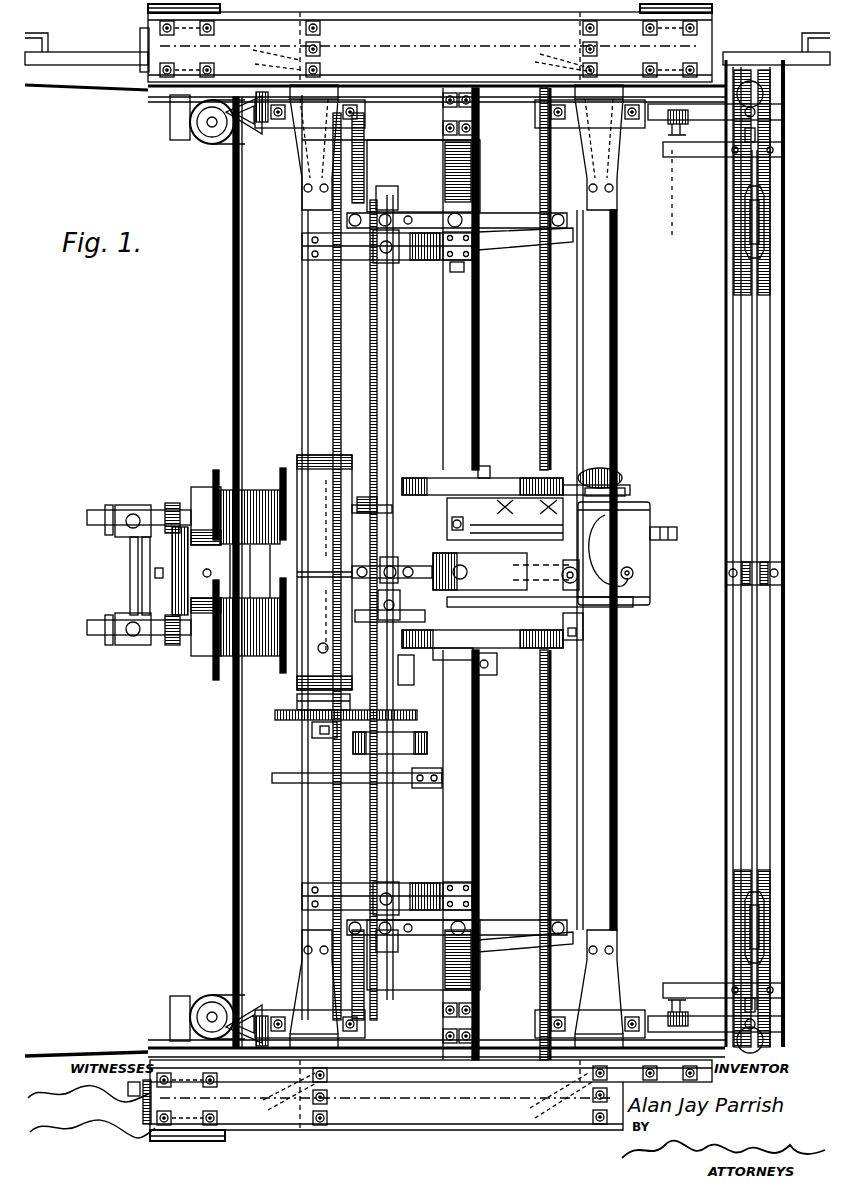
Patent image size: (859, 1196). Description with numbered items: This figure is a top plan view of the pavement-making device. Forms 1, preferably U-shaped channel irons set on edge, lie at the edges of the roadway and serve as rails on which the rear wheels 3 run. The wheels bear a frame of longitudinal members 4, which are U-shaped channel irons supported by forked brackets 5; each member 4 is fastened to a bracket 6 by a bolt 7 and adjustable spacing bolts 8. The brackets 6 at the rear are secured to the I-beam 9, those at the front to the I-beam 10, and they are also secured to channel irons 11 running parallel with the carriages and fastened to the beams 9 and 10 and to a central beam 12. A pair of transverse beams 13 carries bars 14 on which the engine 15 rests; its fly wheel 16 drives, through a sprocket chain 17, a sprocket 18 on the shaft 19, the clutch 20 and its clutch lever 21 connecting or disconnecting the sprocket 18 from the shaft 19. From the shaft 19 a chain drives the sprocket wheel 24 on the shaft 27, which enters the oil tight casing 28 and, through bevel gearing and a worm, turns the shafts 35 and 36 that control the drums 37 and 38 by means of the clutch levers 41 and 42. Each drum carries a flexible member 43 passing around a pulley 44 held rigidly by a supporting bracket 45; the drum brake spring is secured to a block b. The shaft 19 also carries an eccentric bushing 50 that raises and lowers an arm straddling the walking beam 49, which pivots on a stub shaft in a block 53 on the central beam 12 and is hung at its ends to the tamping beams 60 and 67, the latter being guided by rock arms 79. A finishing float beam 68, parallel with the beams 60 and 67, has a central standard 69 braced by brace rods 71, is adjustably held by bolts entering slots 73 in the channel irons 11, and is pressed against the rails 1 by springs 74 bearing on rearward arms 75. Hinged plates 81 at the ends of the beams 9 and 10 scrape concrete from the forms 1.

The forms 1 is at (88, 42).
The rear wheels 3 is at (197, 745).
The longitudinal members 4 is at (360, 50).
The forked brackets 5 is at (148, 10).
The bracket 6 is at (456, 566).
The bolt 7 is at (300, 56).
The adjustable spacing bolts 8 is at (322, 22).
The beam 9 is at (578, 370).
The I-beam 10 is at (306, 376).
The channel irons 11 is at (428, 138).
The central beam 12 is at (332, 24).
The transverse beams 13 is at (423, 477).
The bars 14 is at (583, 625).
The engine 15 is at (628, 518).
The fly wheel 16 is at (512, 478).
The sprocket chain 17 is at (468, 696).
The sprocket 18 is at (722, 547).
The shaft 19 is at (395, 388).
The clutch 20 is at (390, 743).
The clutch lever 21 is at (290, 780).
The sprocket wheel 24 is at (292, 722).
The shaft 27 is at (318, 742).
The oil tight casing 28 is at (324, 572).
The shaft 35 is at (90, 636).
The shaft 36 is at (90, 526).
The drum 37 is at (262, 660).
The drum 38 is at (252, 488).
The clutch lever 41 is at (170, 645).
The clutch lever 42 is at (170, 502).
The flexible member 43 is at (106, 96).
The pulley 44 is at (213, 148).
The supporting bracket 45 is at (245, 135).
The walking beam 49 is at (490, 212).
The eccentric bushing 50 is at (396, 206).
The block 53 is at (475, 262).
The channel iron beam 60 is at (375, 342).
The channel beam 67 is at (565, 420).
The float beam 68 is at (778, 456).
The central standard 69 is at (783, 562).
The brace rods 71 is at (758, 416).
The slots 73 is at (668, 136).
The springs 74 is at (783, 84).
The arms 75 is at (783, 114).
The rock arms 79 is at (530, 238).
The hinged plate 81 is at (268, 1096).
The block b is at (213, 578).